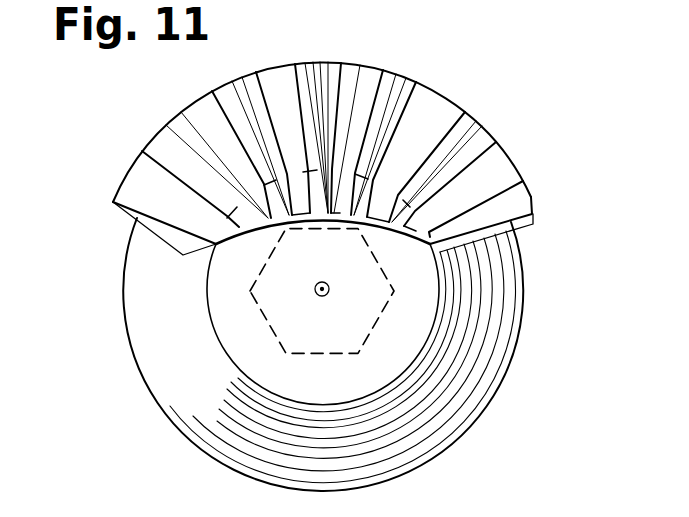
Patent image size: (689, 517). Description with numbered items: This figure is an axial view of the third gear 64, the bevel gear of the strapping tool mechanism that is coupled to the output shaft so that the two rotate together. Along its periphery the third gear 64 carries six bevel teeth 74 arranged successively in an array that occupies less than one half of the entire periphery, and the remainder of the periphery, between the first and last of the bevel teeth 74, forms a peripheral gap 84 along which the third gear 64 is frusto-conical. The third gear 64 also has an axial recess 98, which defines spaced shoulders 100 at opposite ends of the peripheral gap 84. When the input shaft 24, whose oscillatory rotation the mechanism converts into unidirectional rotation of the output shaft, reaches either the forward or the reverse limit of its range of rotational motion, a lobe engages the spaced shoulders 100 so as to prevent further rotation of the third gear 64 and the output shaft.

The bevel teeth 74 is at (465, 116).
The spaced shoulders 100 is at (183, 255).
The input shaft 24 is at (396, 279).
The third gear 64 is at (507, 302).
The peripheral gap 84 is at (485, 328).
The axial recess 98 is at (243, 293).